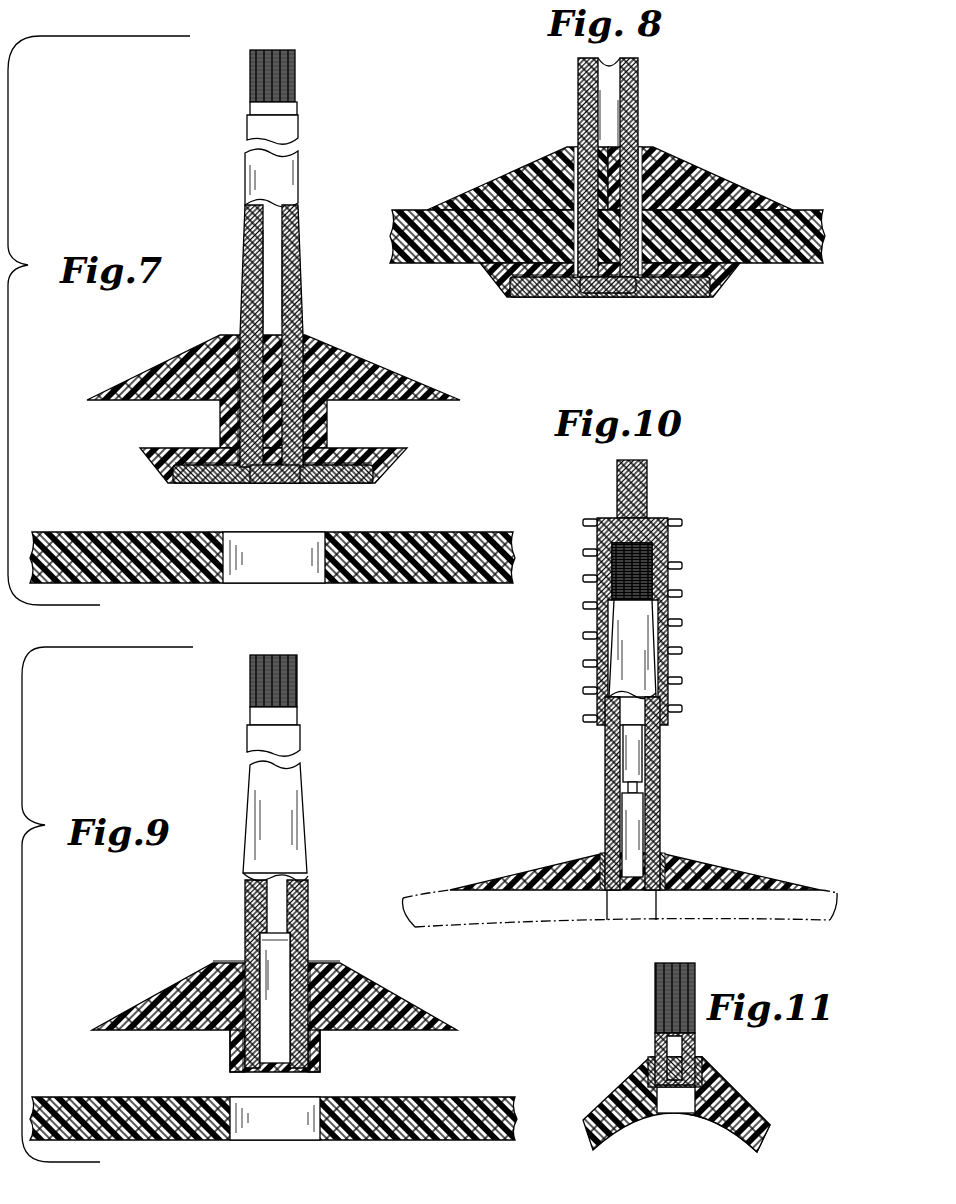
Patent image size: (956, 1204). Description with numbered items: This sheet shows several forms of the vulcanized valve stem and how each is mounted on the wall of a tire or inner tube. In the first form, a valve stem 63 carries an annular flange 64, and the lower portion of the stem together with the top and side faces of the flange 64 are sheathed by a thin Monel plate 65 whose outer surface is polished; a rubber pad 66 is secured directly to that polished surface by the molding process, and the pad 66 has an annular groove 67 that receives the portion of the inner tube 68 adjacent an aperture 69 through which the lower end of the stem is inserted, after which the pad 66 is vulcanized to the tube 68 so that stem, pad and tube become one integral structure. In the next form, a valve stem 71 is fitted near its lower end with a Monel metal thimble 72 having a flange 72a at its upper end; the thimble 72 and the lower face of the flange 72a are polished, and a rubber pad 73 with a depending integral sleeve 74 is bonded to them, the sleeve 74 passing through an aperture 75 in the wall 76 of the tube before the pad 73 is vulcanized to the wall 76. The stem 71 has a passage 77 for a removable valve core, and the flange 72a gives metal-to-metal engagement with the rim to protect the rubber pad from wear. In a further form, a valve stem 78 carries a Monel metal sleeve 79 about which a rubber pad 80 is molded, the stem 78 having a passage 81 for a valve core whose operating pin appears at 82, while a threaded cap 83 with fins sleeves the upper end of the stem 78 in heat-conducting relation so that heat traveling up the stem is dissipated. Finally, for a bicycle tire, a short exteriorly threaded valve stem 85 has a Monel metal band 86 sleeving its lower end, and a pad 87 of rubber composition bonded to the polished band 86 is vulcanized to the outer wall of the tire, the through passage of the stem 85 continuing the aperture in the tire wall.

In FIG. 7, the valve stem 63 is at (298, 292).
In FIG. 8, the valve stem 63 is at (630, 85).
In FIG. 7, the annular flange 64 is at (348, 477).
In FIG. 8, the annular flange 64 is at (662, 290).
In FIG. 7, the thin Monel plate 65 is at (348, 458).
In FIG. 8, the thin Monel plate 65 is at (553, 280).
In FIG. 7, the rubber pad 66 is at (373, 373).
In FIG. 8, the rubber pad 66 is at (713, 180).
In FIG. 7, the annular groove 67 is at (230, 422).
In FIG. 8, the annular groove 67 is at (563, 277).
In FIG. 7, the inner tube 68 is at (193, 543).
In FIG. 8, the inner tube 68 is at (470, 243).
In FIG. 7, the aperture 69 is at (275, 568).
In FIG. 9, the valve stem 71 is at (286, 792).
In FIG. 9, the Monel metal thimble 72 is at (238, 1050).
In FIG. 9, the flange 72a is at (322, 967).
In FIG. 9, the rubber pad 73 is at (388, 1003).
In FIG. 9, the sleeve 74 is at (317, 1052).
In FIG. 9, the aperture 75 is at (283, 1127).
In FIG. 9, the wall 76 is at (355, 1130).
In FIG. 9, the passage 77 is at (277, 907).
In FIG. 10, the valve stem 78 is at (612, 757).
In FIG. 10, the Monel metal sleeve 79 is at (660, 853).
In FIG. 10, the rubber pad 80 is at (713, 872).
In FIG. 10, the passage 81 is at (632, 815).
In FIG. 10, the operating pin 82 is at (625, 543).
In FIG. 10, the threaded cap 83 is at (660, 543).
In FIG. 11, the valve stem 85 is at (655, 977).
In FIG. 11, the Monel metal band 86 is at (700, 1060).
In FIG. 11, the pad 87 is at (723, 1078).